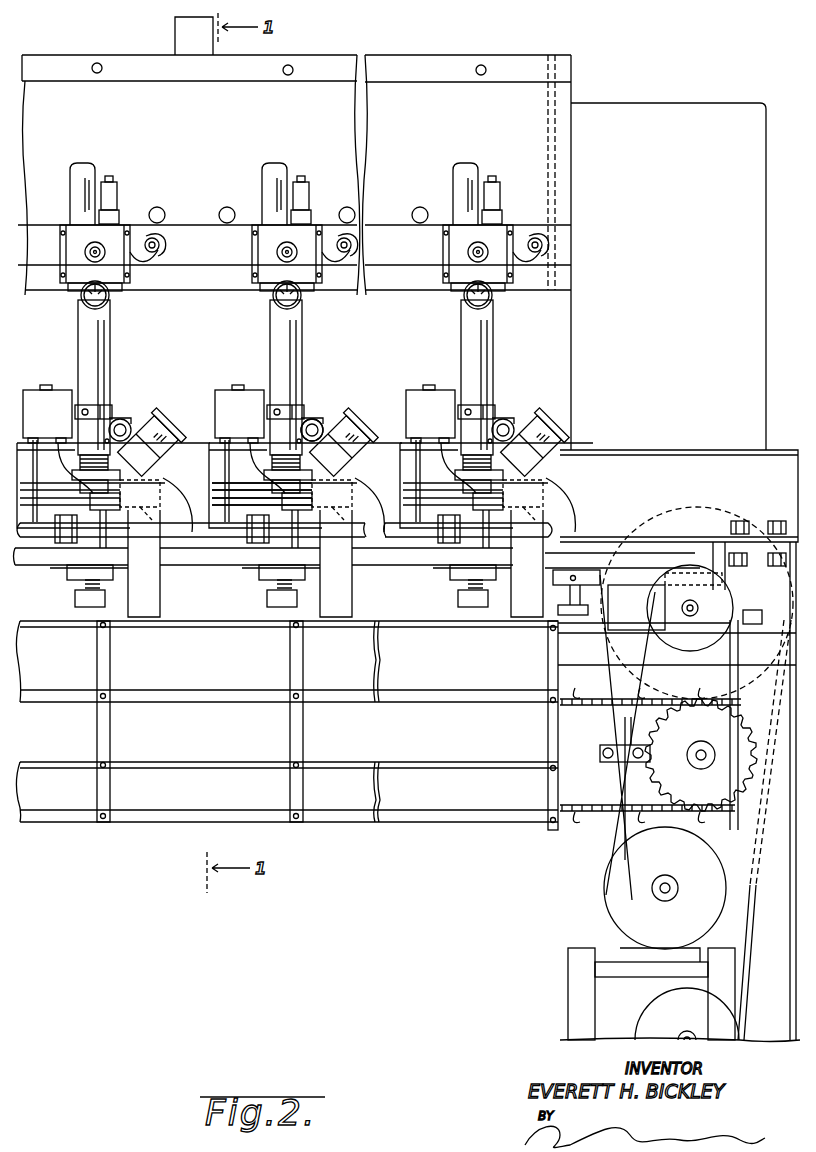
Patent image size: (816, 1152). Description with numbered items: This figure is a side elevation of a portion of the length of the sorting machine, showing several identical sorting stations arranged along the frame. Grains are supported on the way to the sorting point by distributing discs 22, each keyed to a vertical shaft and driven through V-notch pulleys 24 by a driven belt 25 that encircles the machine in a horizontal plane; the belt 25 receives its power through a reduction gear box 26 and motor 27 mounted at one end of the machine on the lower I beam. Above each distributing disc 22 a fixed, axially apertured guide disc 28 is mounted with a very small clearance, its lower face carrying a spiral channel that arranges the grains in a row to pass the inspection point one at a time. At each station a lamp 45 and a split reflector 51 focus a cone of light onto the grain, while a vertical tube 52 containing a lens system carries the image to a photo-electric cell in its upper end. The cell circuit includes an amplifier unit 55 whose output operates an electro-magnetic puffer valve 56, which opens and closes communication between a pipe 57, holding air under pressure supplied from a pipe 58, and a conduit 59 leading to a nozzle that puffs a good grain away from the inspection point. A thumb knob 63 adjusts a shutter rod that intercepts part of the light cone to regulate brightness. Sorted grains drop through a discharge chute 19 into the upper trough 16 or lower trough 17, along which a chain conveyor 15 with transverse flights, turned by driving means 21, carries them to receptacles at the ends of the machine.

The conveyor 15 is at (578, 815).
The upper trough 16 is at (425, 692).
The lower trough 17 is at (447, 780).
The discharge chute 19 is at (144, 563).
The driving means 21 is at (701, 755).
The distributing disc 22 is at (150, 502).
The V-notch pulley 24 is at (62, 570).
The driven belt 25 is at (200, 568).
The reduction gear box 26 is at (670, 608).
The motor 27 is at (646, 1020).
The guide disc 28 is at (215, 492).
The lamp 45 is at (142, 420).
The reflector 51 is at (162, 422).
The tube 52 is at (105, 340).
The amplifier unit 55 is at (110, 235).
The electro-magnetic puffer valve 56 is at (32, 390).
The pipe 57 is at (32, 440).
The pipe 58 is at (545, 530).
The conduit 59 is at (68, 478).
The thumb knob 63 is at (316, 420).